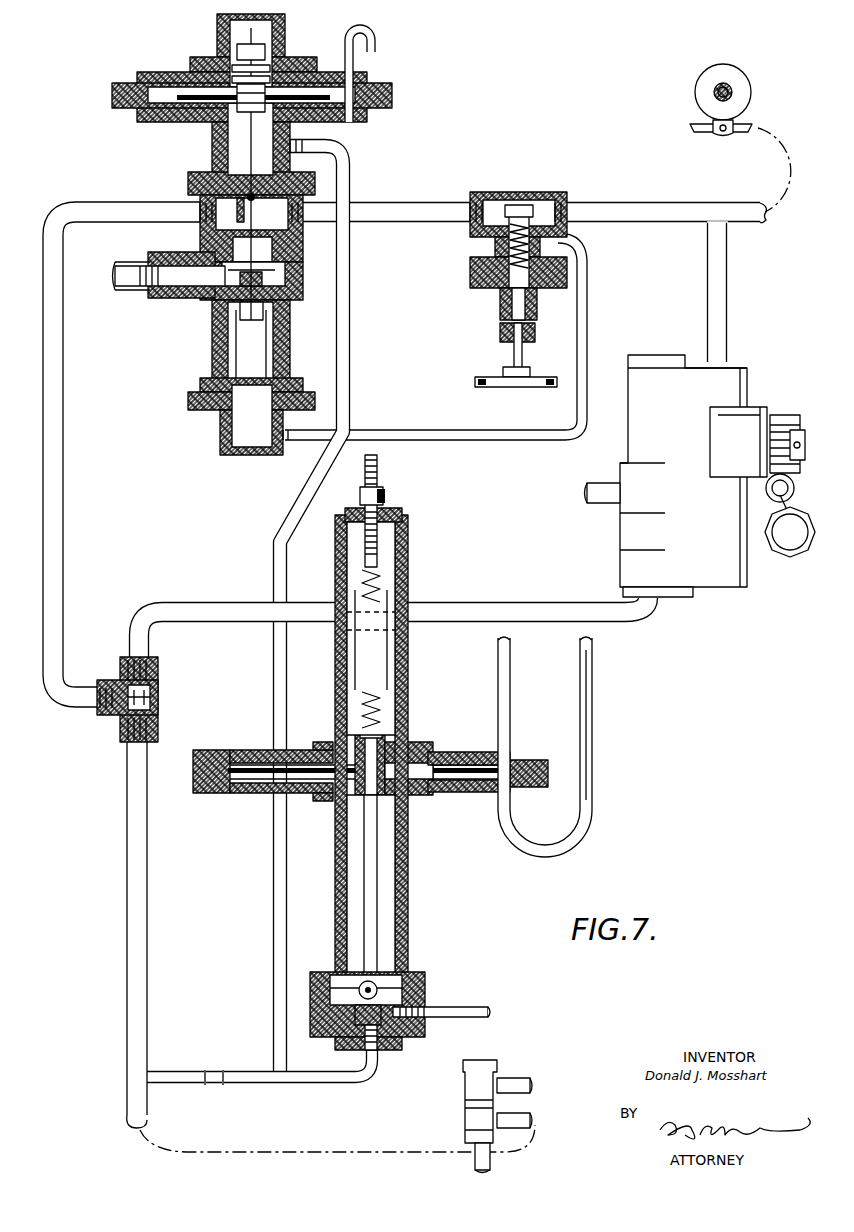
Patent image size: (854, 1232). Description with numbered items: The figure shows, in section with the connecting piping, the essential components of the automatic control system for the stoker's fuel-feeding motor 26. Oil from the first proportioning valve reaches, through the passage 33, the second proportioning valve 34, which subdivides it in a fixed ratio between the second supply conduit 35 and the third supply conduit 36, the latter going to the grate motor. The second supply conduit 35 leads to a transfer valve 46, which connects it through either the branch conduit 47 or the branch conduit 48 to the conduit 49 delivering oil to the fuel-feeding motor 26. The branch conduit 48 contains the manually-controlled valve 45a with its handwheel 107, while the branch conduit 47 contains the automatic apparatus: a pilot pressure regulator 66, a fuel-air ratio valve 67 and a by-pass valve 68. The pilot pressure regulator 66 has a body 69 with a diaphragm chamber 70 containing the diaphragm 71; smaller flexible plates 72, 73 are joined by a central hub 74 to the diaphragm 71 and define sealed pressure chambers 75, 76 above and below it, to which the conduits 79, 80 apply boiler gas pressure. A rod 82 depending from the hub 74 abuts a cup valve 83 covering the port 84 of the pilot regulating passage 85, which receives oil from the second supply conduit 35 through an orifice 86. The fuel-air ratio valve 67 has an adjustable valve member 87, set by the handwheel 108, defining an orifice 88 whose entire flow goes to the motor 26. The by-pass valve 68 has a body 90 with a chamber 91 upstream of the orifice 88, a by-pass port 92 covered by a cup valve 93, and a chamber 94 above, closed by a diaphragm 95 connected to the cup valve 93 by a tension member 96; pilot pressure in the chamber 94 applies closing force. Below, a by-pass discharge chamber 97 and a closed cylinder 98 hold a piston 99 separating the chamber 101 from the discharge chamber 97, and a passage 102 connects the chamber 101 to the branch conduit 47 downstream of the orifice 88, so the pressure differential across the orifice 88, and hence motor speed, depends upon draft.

The fuel-feeding motor 26 is at (696, 94).
The passage 33 is at (476, 1166).
The second proportioning valve 34 is at (470, 1100).
The second supply conduit 35 is at (127, 1112).
The third supply conduit 36 is at (515, 1078).
The manually-controlled valve 45a is at (718, 580).
The transfer valve 46 is at (155, 690).
The branch conduit 47 is at (60, 520).
The branch conduit 48 is at (205, 602).
The conduit 49 is at (735, 210).
The pilot pressure regulator 66 is at (389, 737).
The fuel-air ratio valve 67 is at (506, 287).
The by-pass valve 68 is at (252, 107).
The body 69 is at (252, 795).
The diaphragm chamber 70 is at (370, 762).
The diaphragm 71 is at (215, 790).
The flexible plate 72 is at (392, 732).
The flexible plate 73 is at (410, 800).
The central hub 74 is at (405, 748).
The pressure chamber 75 is at (466, 752).
The pressure chamber 76 is at (476, 792).
The conduit 79 is at (508, 673).
The conduit 80 is at (592, 673).
The rod 82 is at (372, 915).
The cup valve 83 is at (398, 1005).
The port 84 is at (355, 1024).
The pilot regulating passage 85 is at (350, 163).
The orifice 86 is at (214, 1082).
The adjustable valve member 87 is at (500, 238).
The orifice 88 is at (520, 210).
The body 90 is at (212, 128).
The chamber 91 is at (218, 205).
The by-pass port 92 is at (258, 248).
The cup valve 93 is at (280, 280).
The chamber 94 is at (222, 157).
The diaphragm 95 is at (162, 90).
The tension member 96 is at (255, 168).
The by-pass discharge chamber 97 is at (212, 298).
The cylinder 98 is at (278, 335).
The piston 99 is at (278, 360).
The chamber 101 is at (240, 425).
The passage 102 is at (588, 275).
The handwheel 107 is at (790, 545).
The handwheel 108 is at (516, 389).